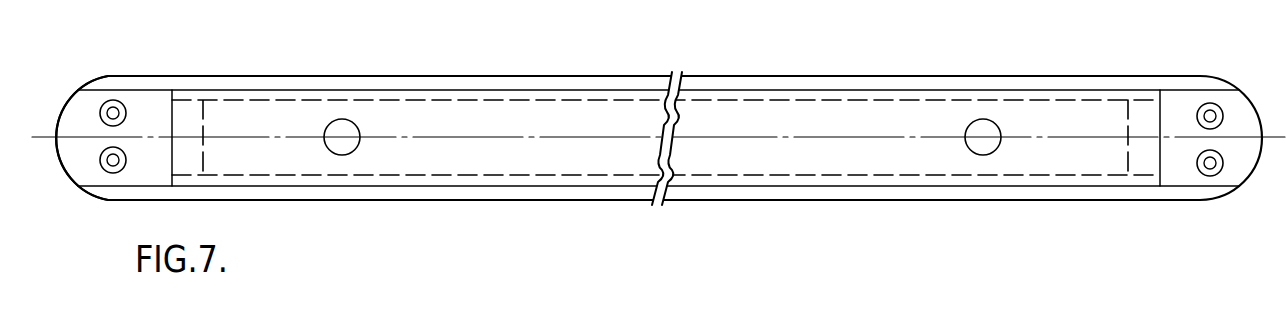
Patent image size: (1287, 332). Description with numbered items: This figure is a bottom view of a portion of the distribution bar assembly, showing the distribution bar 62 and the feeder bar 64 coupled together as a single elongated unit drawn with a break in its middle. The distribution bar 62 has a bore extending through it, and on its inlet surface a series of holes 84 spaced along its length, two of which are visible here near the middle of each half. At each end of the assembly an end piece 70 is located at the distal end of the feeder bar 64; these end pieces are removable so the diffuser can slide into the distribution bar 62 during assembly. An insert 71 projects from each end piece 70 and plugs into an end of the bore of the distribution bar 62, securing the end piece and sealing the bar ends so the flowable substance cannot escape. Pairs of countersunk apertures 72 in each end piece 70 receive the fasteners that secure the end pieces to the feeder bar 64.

The distribution bar 62 is at (1050, 117).
The feeder bar 64 is at (895, 86).
The end piece 70 is at (78, 120).
The insert 71 is at (183, 108).
The countersunk apertures 72 is at (115, 101).
The holes 84 is at (340, 128).